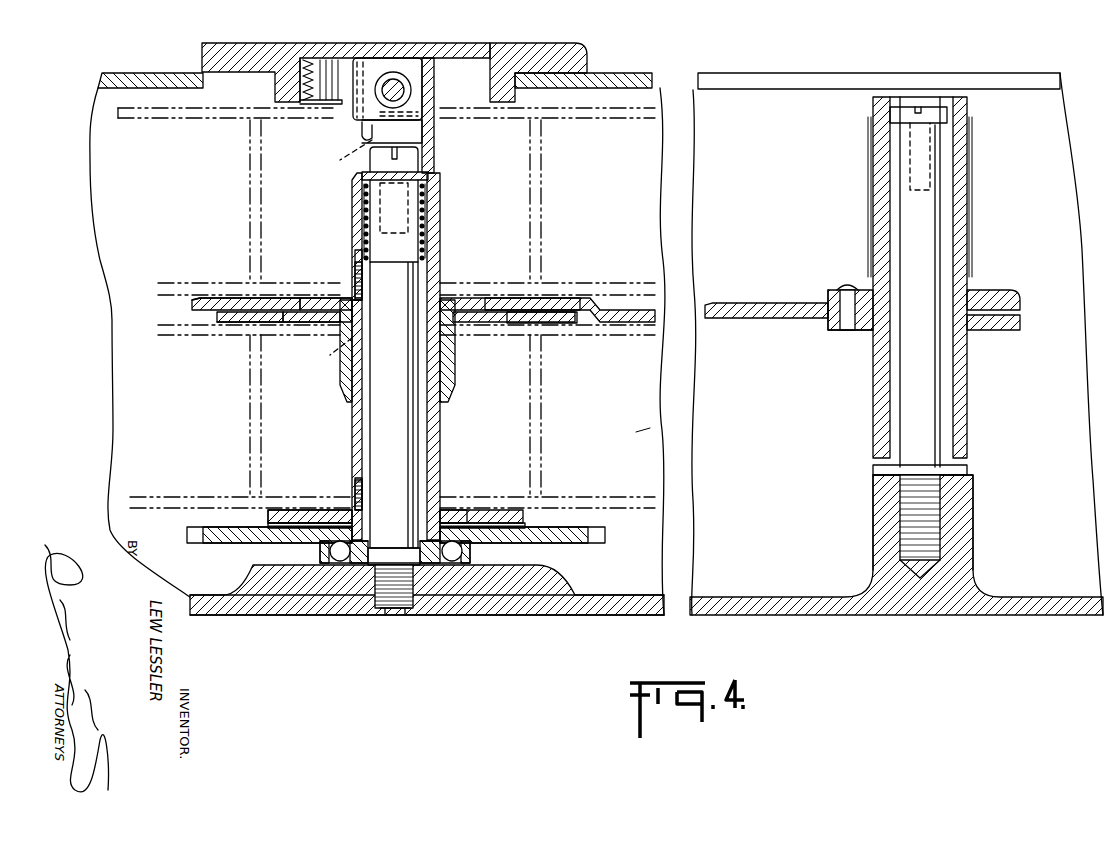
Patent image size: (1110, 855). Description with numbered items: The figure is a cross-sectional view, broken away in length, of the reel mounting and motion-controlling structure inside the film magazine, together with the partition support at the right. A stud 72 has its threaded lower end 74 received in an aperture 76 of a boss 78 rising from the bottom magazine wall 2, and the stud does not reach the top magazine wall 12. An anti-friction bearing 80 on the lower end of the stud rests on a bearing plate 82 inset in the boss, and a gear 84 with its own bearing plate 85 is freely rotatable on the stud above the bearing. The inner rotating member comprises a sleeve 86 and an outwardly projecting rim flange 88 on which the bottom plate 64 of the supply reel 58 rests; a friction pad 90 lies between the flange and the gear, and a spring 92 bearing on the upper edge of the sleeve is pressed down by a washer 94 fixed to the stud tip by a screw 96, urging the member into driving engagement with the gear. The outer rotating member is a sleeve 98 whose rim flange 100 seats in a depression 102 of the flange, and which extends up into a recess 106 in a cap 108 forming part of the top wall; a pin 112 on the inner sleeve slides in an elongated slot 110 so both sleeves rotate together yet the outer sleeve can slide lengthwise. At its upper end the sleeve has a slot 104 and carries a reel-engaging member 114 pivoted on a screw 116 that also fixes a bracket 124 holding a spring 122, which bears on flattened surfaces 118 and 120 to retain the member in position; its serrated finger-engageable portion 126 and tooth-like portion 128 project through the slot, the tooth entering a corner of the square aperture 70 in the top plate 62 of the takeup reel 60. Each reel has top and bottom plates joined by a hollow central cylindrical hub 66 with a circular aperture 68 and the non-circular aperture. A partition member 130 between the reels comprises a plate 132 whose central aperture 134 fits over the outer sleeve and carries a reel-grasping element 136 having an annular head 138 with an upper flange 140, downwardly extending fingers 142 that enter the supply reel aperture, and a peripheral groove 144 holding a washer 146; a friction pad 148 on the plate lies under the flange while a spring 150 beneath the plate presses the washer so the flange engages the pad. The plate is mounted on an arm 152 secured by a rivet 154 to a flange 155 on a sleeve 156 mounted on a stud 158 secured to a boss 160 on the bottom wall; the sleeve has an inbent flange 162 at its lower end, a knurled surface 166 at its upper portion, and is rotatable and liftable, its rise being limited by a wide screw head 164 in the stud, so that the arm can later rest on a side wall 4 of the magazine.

The bottom magazine wall 2 is at (268, 612).
The side wall 4 is at (102, 212).
The top magazine wall 12 is at (607, 73).
The supply reel 58 is at (648, 433).
The takeup reel 60 is at (648, 203).
The top plate 62 is at (630, 118).
The bottom plate 64 is at (630, 283).
The central cylindrical hub 66 is at (543, 221).
The circular aperture 68 is at (355, 280).
The non-circular aperture 70 is at (340, 140).
The stud 72 is at (400, 290).
The lower end of stud 74 is at (382, 612).
The aperture 76 is at (402, 612).
The boss 78 is at (540, 575).
The anti-friction bearing 80 is at (463, 551).
The bearing plate 82 is at (452, 565).
The gear 84 is at (570, 540).
The bearing plate 85 is at (330, 549).
The sleeve 86 is at (441, 377).
The rim flange 88 is at (496, 510).
The friction pad 90 is at (525, 525).
The spring 92 is at (427, 201).
The washer 94 is at (430, 174).
The screw 96 is at (420, 155).
The sleeve 98 is at (352, 210).
The rim flange 100 is at (452, 510).
The depression 102 is at (328, 510).
The slot 104 is at (354, 60).
The recess 106 is at (486, 45).
The cap 108 is at (559, 48).
The elongated slot 110 is at (358, 480).
The pin 112 is at (356, 262).
The reel-engaging member 114 is at (390, 60).
The screw 116 is at (398, 82).
The flattened surface 118 is at (411, 84).
The flattened surface 120 is at (430, 110).
The spring 122 is at (366, 130).
The bracket 124 is at (412, 133).
The serrated finger-engageable portion 126 is at (310, 60).
The tooth-like portion 128 is at (340, 112).
The partition member 130 is at (172, 311).
The plate 132 is at (231, 298).
The central aperture 134 is at (452, 298).
The reel-grasping element 136 is at (465, 359).
The annular head 138 is at (275, 324).
The flange 140 is at (312, 298).
The fingers 142 is at (340, 385).
The peripheral groove 144 is at (320, 322).
The washer 146 is at (480, 322).
The friction pad 148 is at (500, 298).
The spring 150 is at (565, 323).
The arm 152 is at (752, 303).
The rivet 154 is at (848, 285).
The flange 155 is at (828, 294).
The sleeve 156 is at (962, 207).
The stud 158 is at (925, 387).
The boss 160 is at (968, 516).
The inbent flange 162 is at (970, 466).
The screw head 164 is at (932, 107).
The knurled surface 166 is at (968, 145).